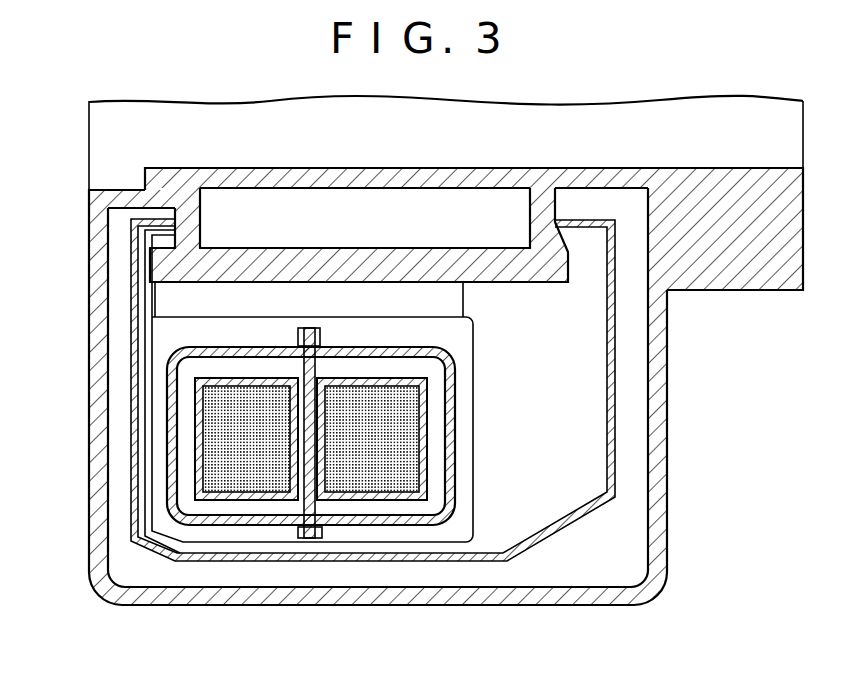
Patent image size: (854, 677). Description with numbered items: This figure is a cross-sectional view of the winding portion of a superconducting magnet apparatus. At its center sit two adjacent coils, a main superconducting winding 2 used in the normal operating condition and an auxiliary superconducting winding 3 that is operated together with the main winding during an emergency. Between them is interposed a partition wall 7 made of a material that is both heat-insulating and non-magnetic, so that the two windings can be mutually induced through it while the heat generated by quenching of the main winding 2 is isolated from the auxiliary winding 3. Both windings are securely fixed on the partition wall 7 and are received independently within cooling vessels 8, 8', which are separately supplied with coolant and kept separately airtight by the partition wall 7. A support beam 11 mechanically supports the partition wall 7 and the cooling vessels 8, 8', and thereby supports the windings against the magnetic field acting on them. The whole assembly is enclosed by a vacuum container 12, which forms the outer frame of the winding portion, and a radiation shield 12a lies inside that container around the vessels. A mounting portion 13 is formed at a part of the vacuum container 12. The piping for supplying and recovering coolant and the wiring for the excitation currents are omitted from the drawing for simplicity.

The main superconducting winding 2 is at (376, 454).
The auxiliary superconducting winding 3 is at (256, 454).
The partition wall 7 is at (317, 365).
The cooling vessel 8 is at (346, 436).
The cooling vessel 8' is at (254, 391).
The support beam 11 is at (457, 305).
The vacuum container 12 is at (478, 606).
The radiation shield 12a is at (575, 517).
The mounting portion 13 is at (722, 290).